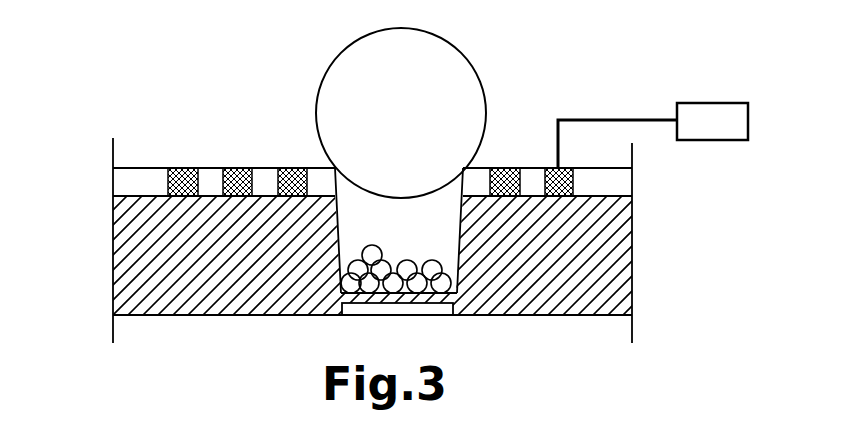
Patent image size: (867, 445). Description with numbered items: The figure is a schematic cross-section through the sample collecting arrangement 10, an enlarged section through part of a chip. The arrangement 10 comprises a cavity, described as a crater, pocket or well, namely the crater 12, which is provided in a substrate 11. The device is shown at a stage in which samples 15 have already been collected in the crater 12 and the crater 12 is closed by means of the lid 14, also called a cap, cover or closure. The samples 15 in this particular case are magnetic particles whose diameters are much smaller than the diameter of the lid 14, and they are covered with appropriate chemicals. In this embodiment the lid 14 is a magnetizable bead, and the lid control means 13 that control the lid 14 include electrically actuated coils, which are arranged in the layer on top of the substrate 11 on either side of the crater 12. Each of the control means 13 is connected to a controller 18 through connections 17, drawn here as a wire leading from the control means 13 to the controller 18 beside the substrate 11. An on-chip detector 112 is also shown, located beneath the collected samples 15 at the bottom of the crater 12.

The sample collecting arrangement 10 is at (146, 90).
The substrate 11 is at (130, 262).
The crater 12 is at (412, 233).
The lid control means 13 is at (297, 167).
The lid 14 is at (340, 78).
The samples 15 is at (345, 288).
The on-chip detector 112 is at (408, 310).
The connections 17 is at (624, 118).
The controller 18 is at (717, 110).